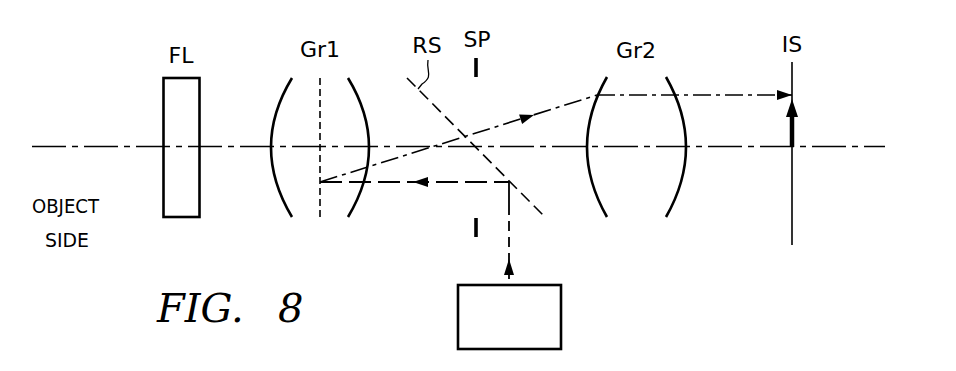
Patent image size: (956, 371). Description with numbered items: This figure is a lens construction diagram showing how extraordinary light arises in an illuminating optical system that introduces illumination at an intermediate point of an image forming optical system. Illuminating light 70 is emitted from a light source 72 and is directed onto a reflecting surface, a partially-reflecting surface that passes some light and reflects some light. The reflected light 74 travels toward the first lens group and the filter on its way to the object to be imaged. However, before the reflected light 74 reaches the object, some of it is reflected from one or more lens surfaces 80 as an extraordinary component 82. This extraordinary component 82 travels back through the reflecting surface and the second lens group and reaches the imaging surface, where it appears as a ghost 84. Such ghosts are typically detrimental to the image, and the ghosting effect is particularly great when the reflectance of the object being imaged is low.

The illuminating light 70 is at (511, 240).
The light source 72 is at (562, 318).
The reflected light 74 is at (390, 184).
The lens surface 80 is at (555, 108).
The extraordinary component 82 is at (320, 202).
The ghost 84 is at (796, 130).